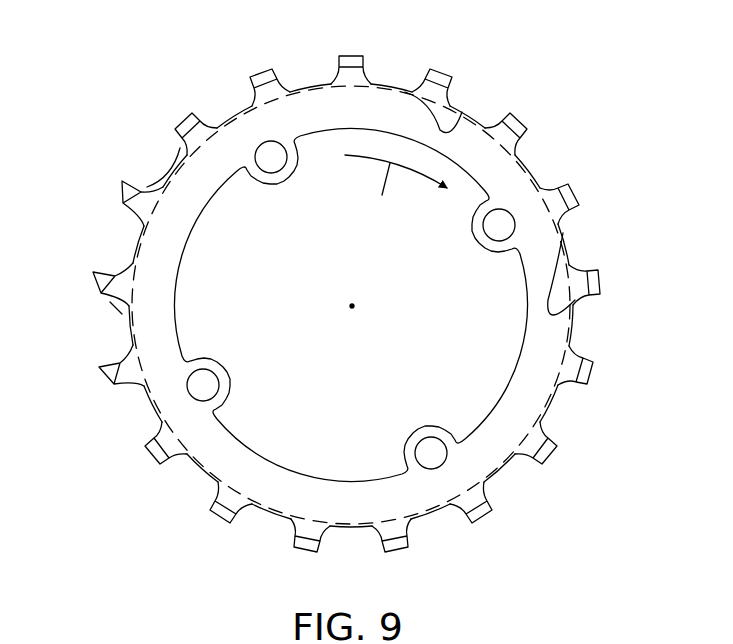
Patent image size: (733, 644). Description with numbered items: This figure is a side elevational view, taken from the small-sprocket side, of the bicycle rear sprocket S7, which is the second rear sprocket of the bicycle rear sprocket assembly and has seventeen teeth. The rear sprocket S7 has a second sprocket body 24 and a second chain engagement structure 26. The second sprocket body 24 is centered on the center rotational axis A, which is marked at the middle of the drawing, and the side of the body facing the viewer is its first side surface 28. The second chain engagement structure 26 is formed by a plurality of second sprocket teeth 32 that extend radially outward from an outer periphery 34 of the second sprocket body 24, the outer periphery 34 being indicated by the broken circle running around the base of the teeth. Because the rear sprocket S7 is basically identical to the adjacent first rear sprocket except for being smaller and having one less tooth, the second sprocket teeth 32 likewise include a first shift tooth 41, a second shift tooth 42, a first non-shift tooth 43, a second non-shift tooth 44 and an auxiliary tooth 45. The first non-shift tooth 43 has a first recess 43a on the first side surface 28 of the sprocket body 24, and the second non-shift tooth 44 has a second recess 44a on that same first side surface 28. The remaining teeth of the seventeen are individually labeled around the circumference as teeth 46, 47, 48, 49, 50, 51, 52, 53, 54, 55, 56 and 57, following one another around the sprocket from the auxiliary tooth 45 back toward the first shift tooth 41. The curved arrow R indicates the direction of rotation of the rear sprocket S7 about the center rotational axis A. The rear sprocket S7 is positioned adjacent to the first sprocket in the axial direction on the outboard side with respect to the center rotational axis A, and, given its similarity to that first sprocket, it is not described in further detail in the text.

The second sprocket body 24 is at (182, 313).
The first side surface 28 is at (176, 221).
The outer periphery 34 is at (310, 524).
The first shift tooth 41 is at (358, 50).
The second shift tooth 42 is at (590, 190).
The first non-shift tooth 43 is at (450, 71).
The second non-shift tooth 44 is at (610, 277).
The auxiliary tooth 45 is at (532, 117).
The tooth 46 is at (600, 380).
The tooth 47 is at (560, 462).
The tooth 48 is at (492, 526).
The tooth 49 is at (402, 557).
The tooth 50 is at (302, 557).
The tooth 51 is at (216, 525).
The tooth 52 is at (150, 460).
The tooth 53 is at (104, 380).
The tooth 54 is at (96, 285).
The tooth 55 is at (124, 194).
The tooth 56 is at (178, 114).
The tooth 57 is at (262, 66).
The first recess 43a is at (425, 105).
The second recess 44a is at (560, 290).
The second sprocket teeth 32 is at (178, 150).
The second chain engagement structure 26 is at (118, 309).
The bicycle rear sprocket S7 is at (628, 100).
The rotation direction R is at (396, 189).
The center rotational axis A is at (354, 308).